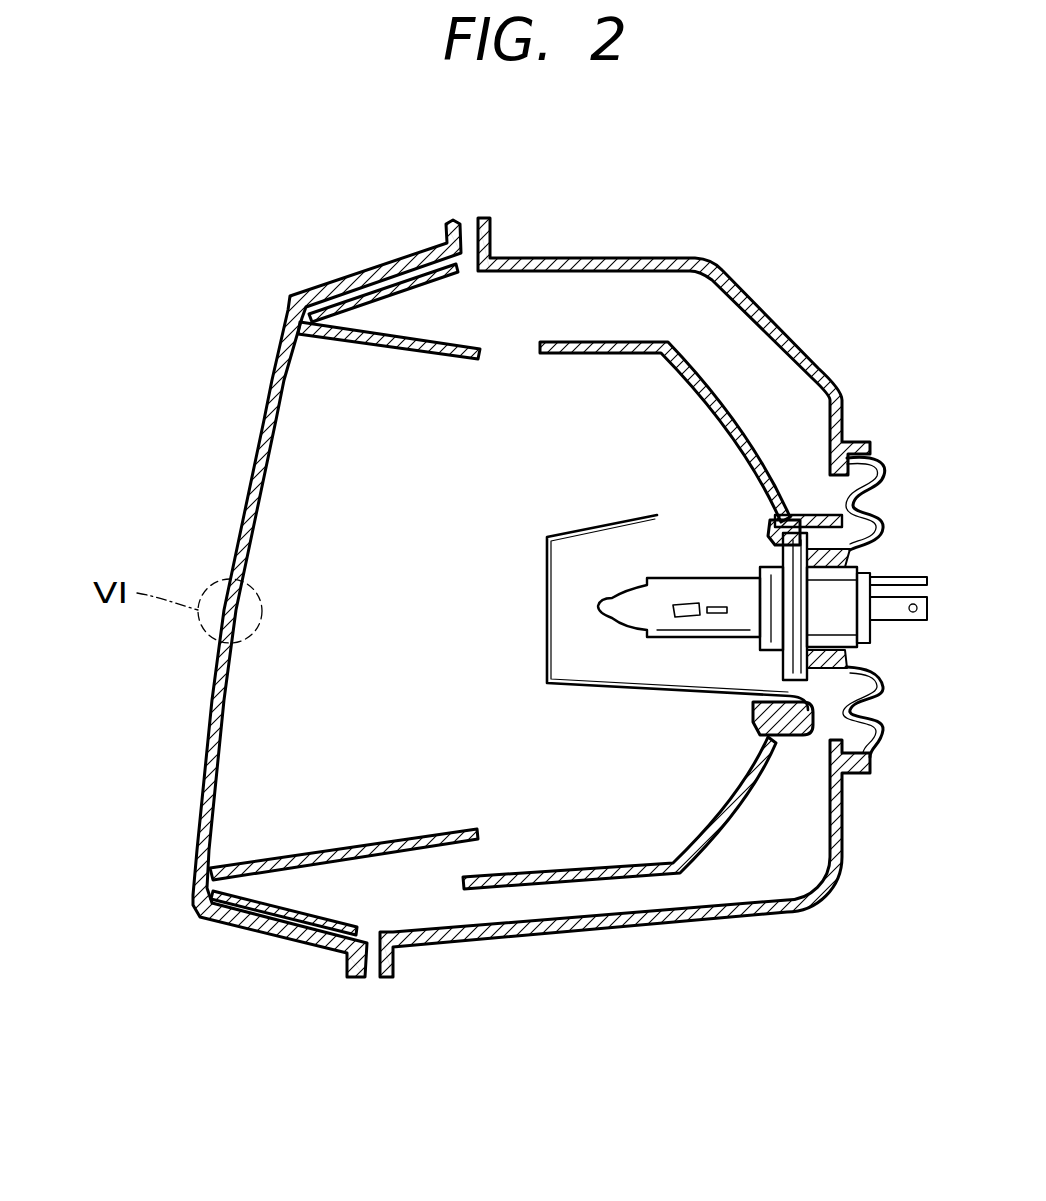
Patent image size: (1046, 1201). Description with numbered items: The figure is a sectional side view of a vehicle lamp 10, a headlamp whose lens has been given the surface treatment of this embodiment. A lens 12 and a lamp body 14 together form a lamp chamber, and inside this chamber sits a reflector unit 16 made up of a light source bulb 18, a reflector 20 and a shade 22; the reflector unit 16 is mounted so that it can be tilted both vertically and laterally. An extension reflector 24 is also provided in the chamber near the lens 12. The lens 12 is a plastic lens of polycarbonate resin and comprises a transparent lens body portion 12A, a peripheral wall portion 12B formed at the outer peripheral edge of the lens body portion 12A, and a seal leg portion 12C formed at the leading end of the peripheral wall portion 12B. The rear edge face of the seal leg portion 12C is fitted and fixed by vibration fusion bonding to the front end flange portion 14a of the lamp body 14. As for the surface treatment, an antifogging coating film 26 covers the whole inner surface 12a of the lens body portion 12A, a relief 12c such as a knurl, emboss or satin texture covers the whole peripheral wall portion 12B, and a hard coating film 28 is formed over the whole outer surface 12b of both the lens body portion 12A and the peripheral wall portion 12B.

The vehicle lamp 10 is at (297, 150).
The lens 12 is at (312, 604).
The lens body portion 12A is at (260, 455).
The peripheral wall portion 12B is at (368, 263).
The seal leg portion 12C is at (458, 221).
The inner surface 12a is at (224, 740).
The outer surface 12b is at (205, 750).
The relief 12c is at (410, 270).
The lamp body 14 is at (625, 575).
The front end flange portion 14a is at (491, 240).
The reflector unit 16 is at (500, 452).
The light source bulb 18 is at (716, 570).
The reflector 20 is at (717, 412).
The shade 22 is at (540, 570).
The extension reflector 24 is at (336, 845).
The antifogging coating film 26 is at (246, 560).
The hard coating film 28 is at (236, 543).